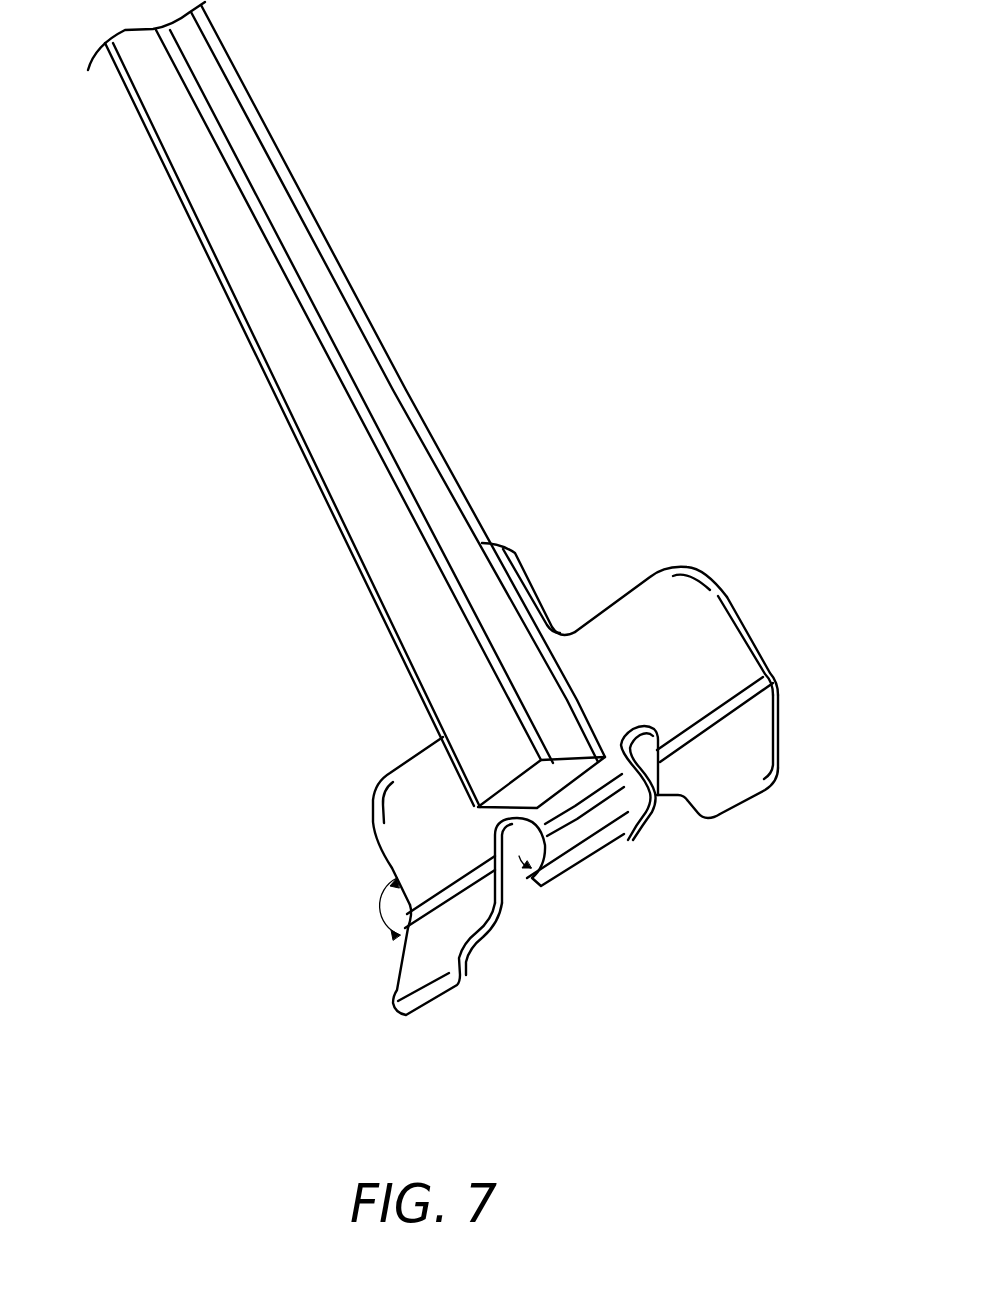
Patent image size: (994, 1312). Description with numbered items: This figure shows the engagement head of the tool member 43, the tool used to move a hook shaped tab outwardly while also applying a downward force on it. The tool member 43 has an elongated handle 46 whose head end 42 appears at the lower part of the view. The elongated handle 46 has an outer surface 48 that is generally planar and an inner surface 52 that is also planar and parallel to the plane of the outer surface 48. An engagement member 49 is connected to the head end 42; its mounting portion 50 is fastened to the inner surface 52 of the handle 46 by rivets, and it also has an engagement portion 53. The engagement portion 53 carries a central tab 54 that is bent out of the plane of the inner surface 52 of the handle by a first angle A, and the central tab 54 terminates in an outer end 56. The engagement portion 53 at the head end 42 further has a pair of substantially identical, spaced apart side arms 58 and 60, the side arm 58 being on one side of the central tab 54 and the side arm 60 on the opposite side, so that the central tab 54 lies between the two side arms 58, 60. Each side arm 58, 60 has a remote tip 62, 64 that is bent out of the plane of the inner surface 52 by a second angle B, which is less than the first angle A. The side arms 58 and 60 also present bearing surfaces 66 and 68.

The head end 42 is at (574, 749).
The tool member 43 is at (346, 405).
The elongated handle 46 is at (355, 425).
The outer surface 48 is at (354, 396).
The engagement member 49 is at (647, 577).
The mounting portion 50 is at (534, 571).
The inner surface 52 is at (351, 282).
The engagement portion 53 is at (708, 578).
The central tab 54 is at (568, 866).
The outer end 56 is at (627, 832).
The side arm 58 is at (779, 731).
The side arm 60 is at (398, 990).
The remote tip 62 is at (753, 788).
The remote tip 64 is at (430, 996).
The bearing surface 66 is at (746, 621).
The bearing surface 68 is at (372, 821).